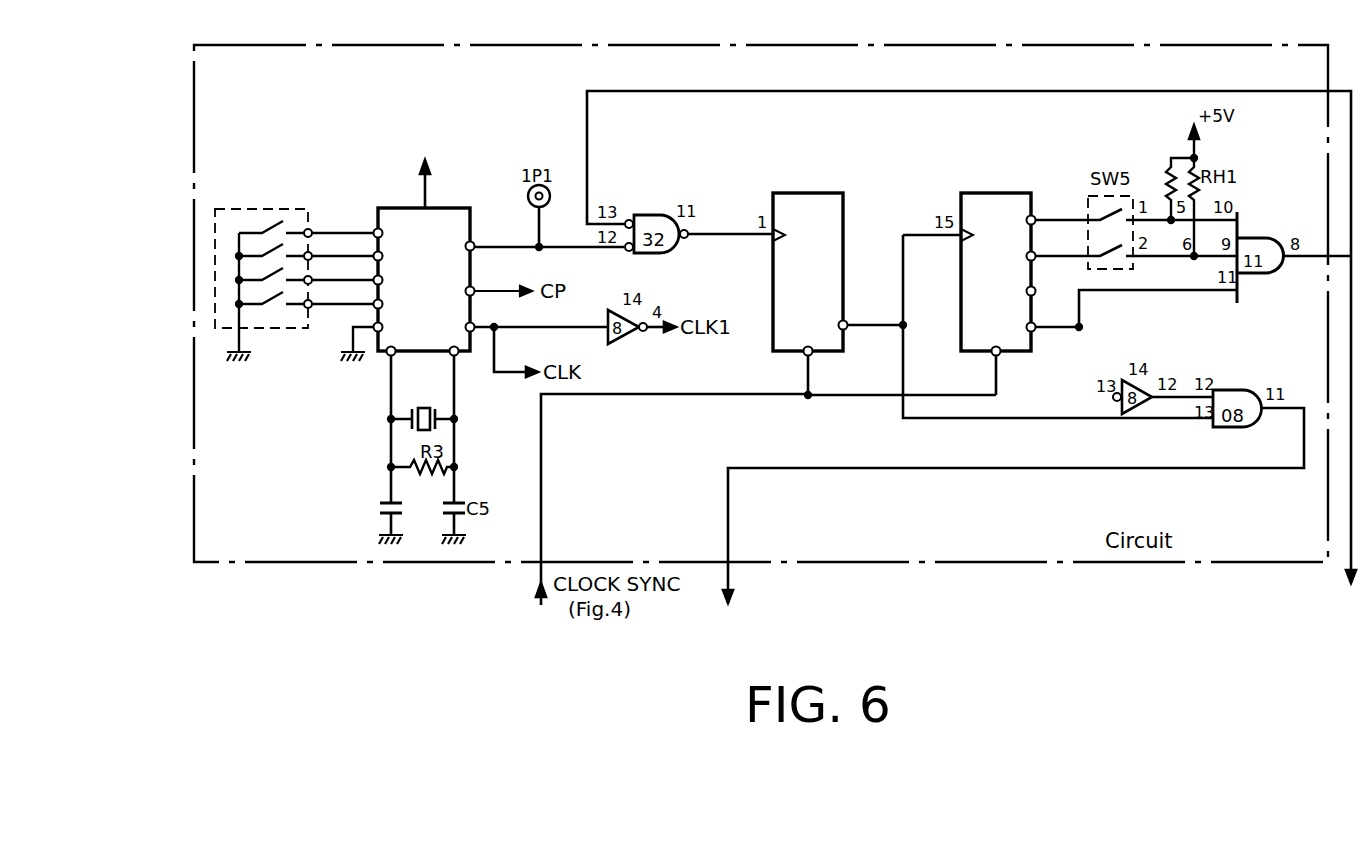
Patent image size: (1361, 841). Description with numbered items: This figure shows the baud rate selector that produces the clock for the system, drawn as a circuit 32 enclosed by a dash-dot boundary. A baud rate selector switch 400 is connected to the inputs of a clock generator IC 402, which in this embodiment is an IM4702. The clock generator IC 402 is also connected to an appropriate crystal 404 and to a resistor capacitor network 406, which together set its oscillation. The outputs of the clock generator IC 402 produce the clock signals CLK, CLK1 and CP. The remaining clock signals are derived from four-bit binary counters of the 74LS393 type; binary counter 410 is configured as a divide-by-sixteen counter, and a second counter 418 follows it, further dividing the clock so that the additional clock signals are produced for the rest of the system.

The baud rate / clock generating circuit 32 is at (1205, 564).
The baud rate selector switch 400 is at (306, 329).
The clock generator IC 402 is at (387, 207).
The crystal 404 is at (391, 414).
The resistor capacitor network 406 is at (360, 507).
The binary counter 410 is at (799, 193).
The counter 418 is at (987, 193).